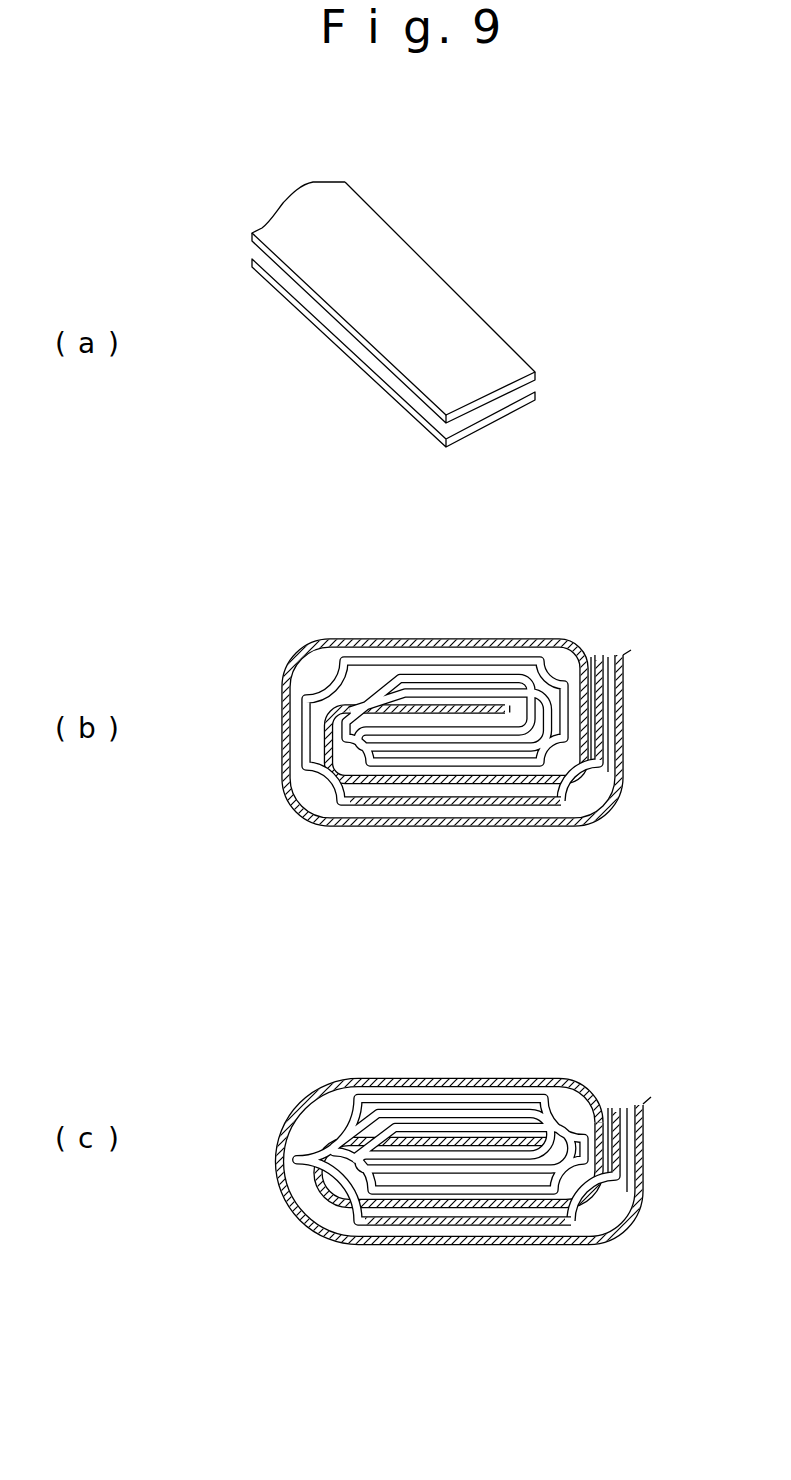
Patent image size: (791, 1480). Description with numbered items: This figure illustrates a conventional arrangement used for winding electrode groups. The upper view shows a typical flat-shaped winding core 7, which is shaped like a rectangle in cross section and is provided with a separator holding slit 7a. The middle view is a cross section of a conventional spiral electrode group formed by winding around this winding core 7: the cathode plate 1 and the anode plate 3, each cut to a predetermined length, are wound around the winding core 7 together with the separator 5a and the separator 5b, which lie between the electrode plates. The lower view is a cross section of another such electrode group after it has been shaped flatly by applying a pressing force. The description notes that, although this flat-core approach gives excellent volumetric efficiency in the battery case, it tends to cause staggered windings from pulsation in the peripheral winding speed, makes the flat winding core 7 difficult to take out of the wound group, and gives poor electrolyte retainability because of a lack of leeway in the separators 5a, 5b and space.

The winding core 7 is at (487, 355).
The separator holding slit 7a is at (517, 395).
The cathode plate 1 is at (583, 818).
The anode plate 3 is at (600, 755).
The separator 5a is at (407, 790).
The separator 5b is at (470, 812).